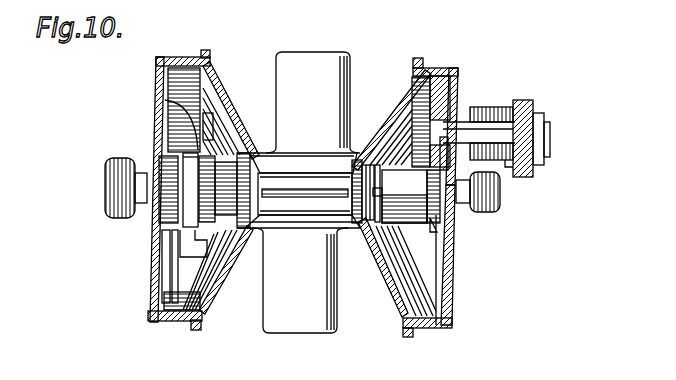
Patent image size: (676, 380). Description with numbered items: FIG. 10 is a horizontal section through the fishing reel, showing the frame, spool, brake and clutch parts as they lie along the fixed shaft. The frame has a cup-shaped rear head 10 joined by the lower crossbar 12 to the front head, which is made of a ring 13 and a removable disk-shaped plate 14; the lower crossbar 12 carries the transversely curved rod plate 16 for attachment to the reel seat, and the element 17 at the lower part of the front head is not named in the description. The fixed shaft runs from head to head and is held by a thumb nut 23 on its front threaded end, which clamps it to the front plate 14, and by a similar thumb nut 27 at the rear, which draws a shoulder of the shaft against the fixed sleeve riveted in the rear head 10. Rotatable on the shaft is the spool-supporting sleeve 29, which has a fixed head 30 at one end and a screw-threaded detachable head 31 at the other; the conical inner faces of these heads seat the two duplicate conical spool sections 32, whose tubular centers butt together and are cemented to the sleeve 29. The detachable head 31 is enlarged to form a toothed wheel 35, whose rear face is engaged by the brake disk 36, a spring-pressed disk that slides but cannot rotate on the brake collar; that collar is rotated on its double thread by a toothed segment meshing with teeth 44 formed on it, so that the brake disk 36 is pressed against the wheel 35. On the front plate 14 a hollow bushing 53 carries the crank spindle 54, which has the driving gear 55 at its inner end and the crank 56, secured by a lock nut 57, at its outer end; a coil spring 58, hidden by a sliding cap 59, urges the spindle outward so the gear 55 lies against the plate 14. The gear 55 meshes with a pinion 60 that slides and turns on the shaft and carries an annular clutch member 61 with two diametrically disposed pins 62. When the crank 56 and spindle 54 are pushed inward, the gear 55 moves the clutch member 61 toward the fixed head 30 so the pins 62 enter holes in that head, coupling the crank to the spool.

The rear head 10 is at (181, 322).
The lower crossbar 12 is at (271, 190).
The ring 13 is at (425, 68).
The disk shaped plate 14 is at (457, 79).
The rod plate 16 is at (313, 333).
The lower side wall 17 is at (447, 287).
The thumb nut 23 is at (502, 219).
The thumb nut 27 is at (108, 217).
The spool-supporting sleeve 29 is at (304, 226).
The fixed head 30 is at (352, 170).
The detachable head 31 is at (247, 152).
The spool sections 32 is at (236, 266).
The toothed wheel 35 is at (231, 112).
The brake disk 36 is at (165, 101).
The teeth 44 is at (156, 161).
The hollow bushing 53 is at (458, 122).
The crank spindle 54 is at (546, 131).
The driving gear 55 is at (410, 95).
The crank 56 is at (532, 108).
The lock nut 57 is at (551, 146).
The coil spring 58 is at (500, 112).
The sliding cap 59 is at (509, 162).
The pinion 60 is at (447, 240).
The annular clutch member 61 is at (386, 202).
The pins 62 is at (376, 182).